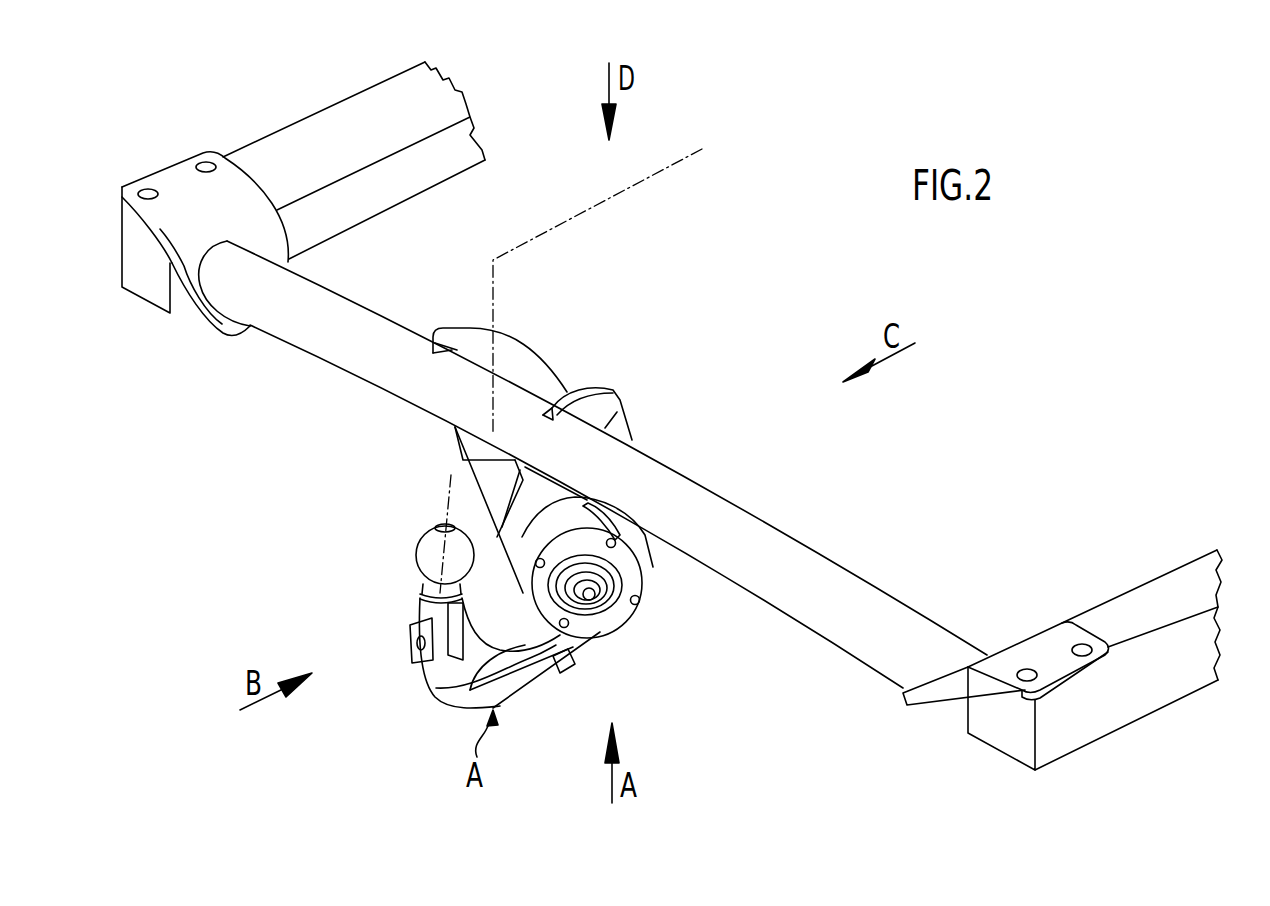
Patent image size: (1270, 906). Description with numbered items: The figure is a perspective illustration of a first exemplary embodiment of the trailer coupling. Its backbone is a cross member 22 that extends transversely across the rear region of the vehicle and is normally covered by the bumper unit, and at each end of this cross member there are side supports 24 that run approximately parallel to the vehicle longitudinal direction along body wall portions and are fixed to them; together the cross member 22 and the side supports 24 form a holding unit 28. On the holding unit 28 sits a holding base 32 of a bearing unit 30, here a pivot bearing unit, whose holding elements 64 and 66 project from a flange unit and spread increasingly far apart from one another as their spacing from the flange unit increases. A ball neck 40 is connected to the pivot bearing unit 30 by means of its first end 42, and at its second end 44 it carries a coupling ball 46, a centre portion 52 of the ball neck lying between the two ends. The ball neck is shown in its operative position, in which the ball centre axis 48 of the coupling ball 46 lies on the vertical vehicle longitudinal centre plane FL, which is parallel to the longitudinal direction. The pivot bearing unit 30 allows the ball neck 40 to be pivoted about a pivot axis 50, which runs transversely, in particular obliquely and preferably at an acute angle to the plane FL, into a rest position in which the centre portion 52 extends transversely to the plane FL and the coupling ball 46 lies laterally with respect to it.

The cross member 22 is at (822, 577).
The side supports 24 is at (297, 133).
The holding unit 28 is at (665, 352).
The bearing unit 30 is at (650, 581).
The holding base 32 is at (652, 432).
The ball neck 40 is at (570, 685).
The first end 42 is at (583, 643).
The second end 44 is at (425, 584).
The coupling ball 46 is at (428, 550).
The ball centre axis 48 is at (447, 490).
The pivot axis 50 is at (590, 594).
The centre portion 52 is at (523, 688).
The holding element 64 is at (463, 337).
The holding element 66 is at (588, 402).
The vehicle longitudinal centre plane FL is at (543, 230).